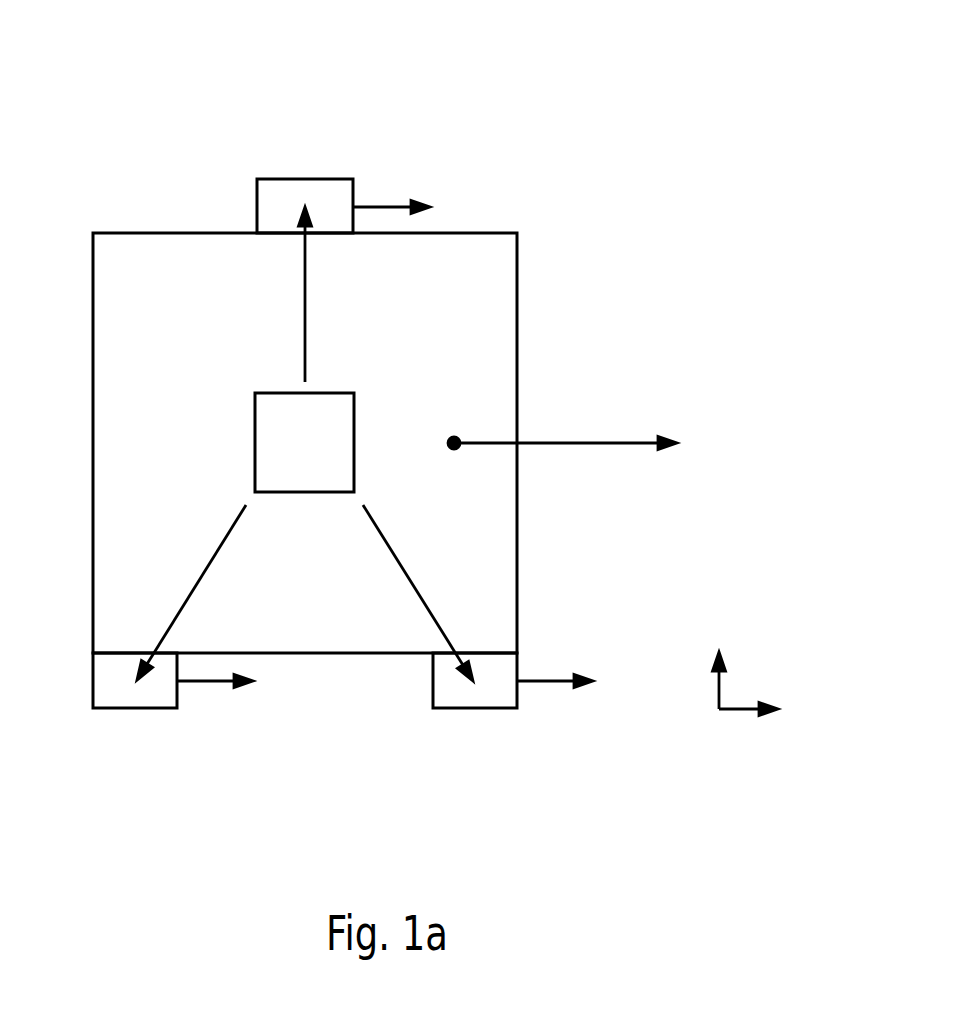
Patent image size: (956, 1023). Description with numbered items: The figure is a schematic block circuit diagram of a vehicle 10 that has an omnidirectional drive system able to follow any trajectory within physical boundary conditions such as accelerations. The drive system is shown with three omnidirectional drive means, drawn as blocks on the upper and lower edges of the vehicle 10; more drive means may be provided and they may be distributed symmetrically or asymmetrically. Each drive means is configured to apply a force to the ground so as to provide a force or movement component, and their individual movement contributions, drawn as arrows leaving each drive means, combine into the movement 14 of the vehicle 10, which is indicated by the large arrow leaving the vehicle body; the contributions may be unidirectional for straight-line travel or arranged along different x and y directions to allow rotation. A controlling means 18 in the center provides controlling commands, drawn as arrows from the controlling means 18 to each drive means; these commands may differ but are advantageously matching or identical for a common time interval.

The vehicle 10 is at (609, 41).
The movement 14 is at (570, 443).
The controlling means 18 is at (255, 443).